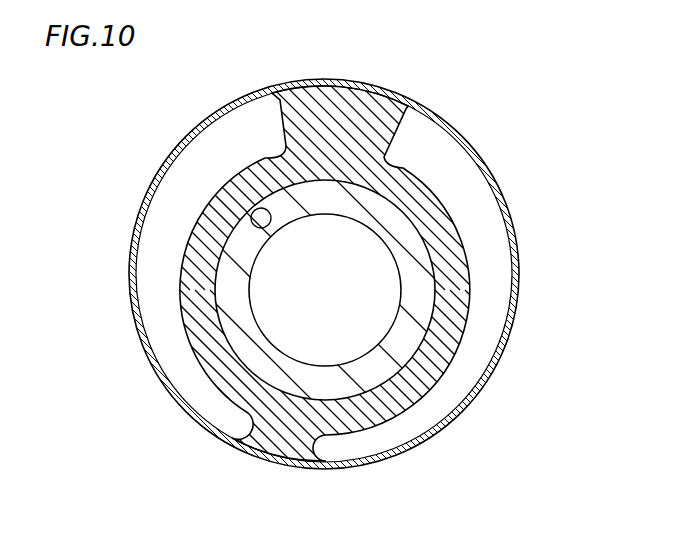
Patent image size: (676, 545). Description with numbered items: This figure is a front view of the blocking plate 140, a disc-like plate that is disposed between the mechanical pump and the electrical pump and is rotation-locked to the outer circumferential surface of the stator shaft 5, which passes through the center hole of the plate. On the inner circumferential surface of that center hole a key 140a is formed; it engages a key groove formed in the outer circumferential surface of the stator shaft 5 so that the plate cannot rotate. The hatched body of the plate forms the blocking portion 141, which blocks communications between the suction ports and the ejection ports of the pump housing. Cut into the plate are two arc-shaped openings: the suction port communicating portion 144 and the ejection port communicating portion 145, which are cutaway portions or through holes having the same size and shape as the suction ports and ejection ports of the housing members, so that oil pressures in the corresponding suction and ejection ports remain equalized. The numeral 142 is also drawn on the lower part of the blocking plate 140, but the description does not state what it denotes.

The stator shaft 5 is at (255, 361).
The blocking plate 140 is at (190, 133).
The key 140a is at (257, 231).
The blocking portion 141 is at (355, 122).
The second member 142 is at (284, 438).
The suction port communicating portion 144 is at (475, 355).
The ejection port communicating portion 145 is at (181, 357).